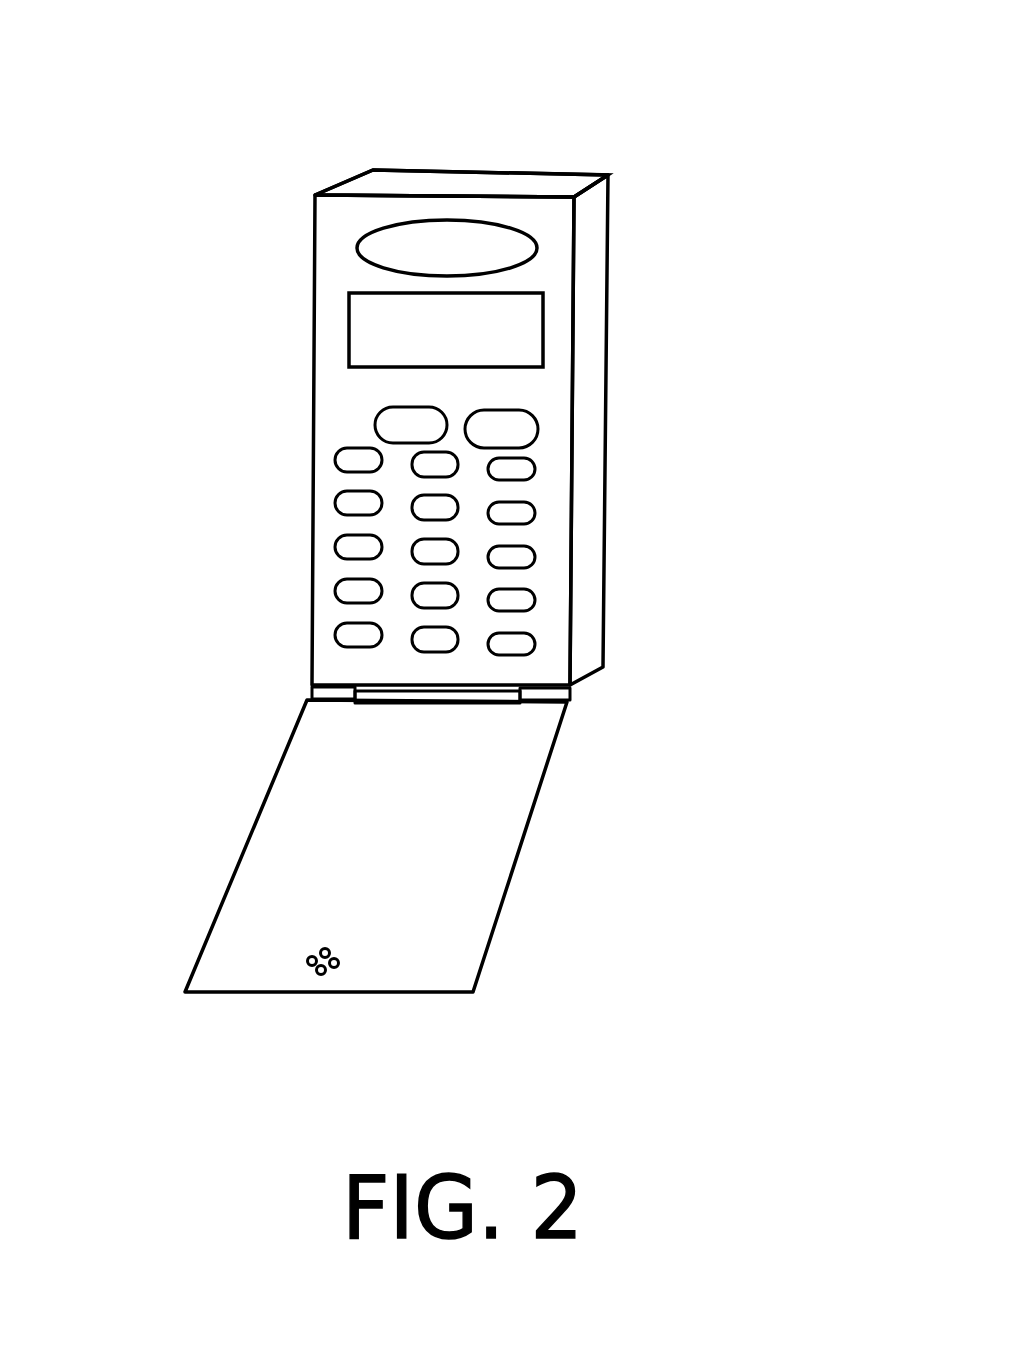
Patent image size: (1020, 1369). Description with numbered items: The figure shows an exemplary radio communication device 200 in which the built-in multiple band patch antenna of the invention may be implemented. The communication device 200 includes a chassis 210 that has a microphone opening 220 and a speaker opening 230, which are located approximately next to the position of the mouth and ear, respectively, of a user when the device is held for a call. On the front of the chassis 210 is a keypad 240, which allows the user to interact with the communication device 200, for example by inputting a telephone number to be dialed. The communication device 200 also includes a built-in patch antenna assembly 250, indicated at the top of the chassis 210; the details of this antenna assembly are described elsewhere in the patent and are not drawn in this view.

The radio communication device 200 is at (475, 499).
The chassis 210 is at (620, 417).
The microphone opening 220 is at (290, 920).
The speaker opening 230 is at (447, 225).
The keypad 240 is at (550, 554).
The built-in patch antenna assembly 250 is at (545, 176).